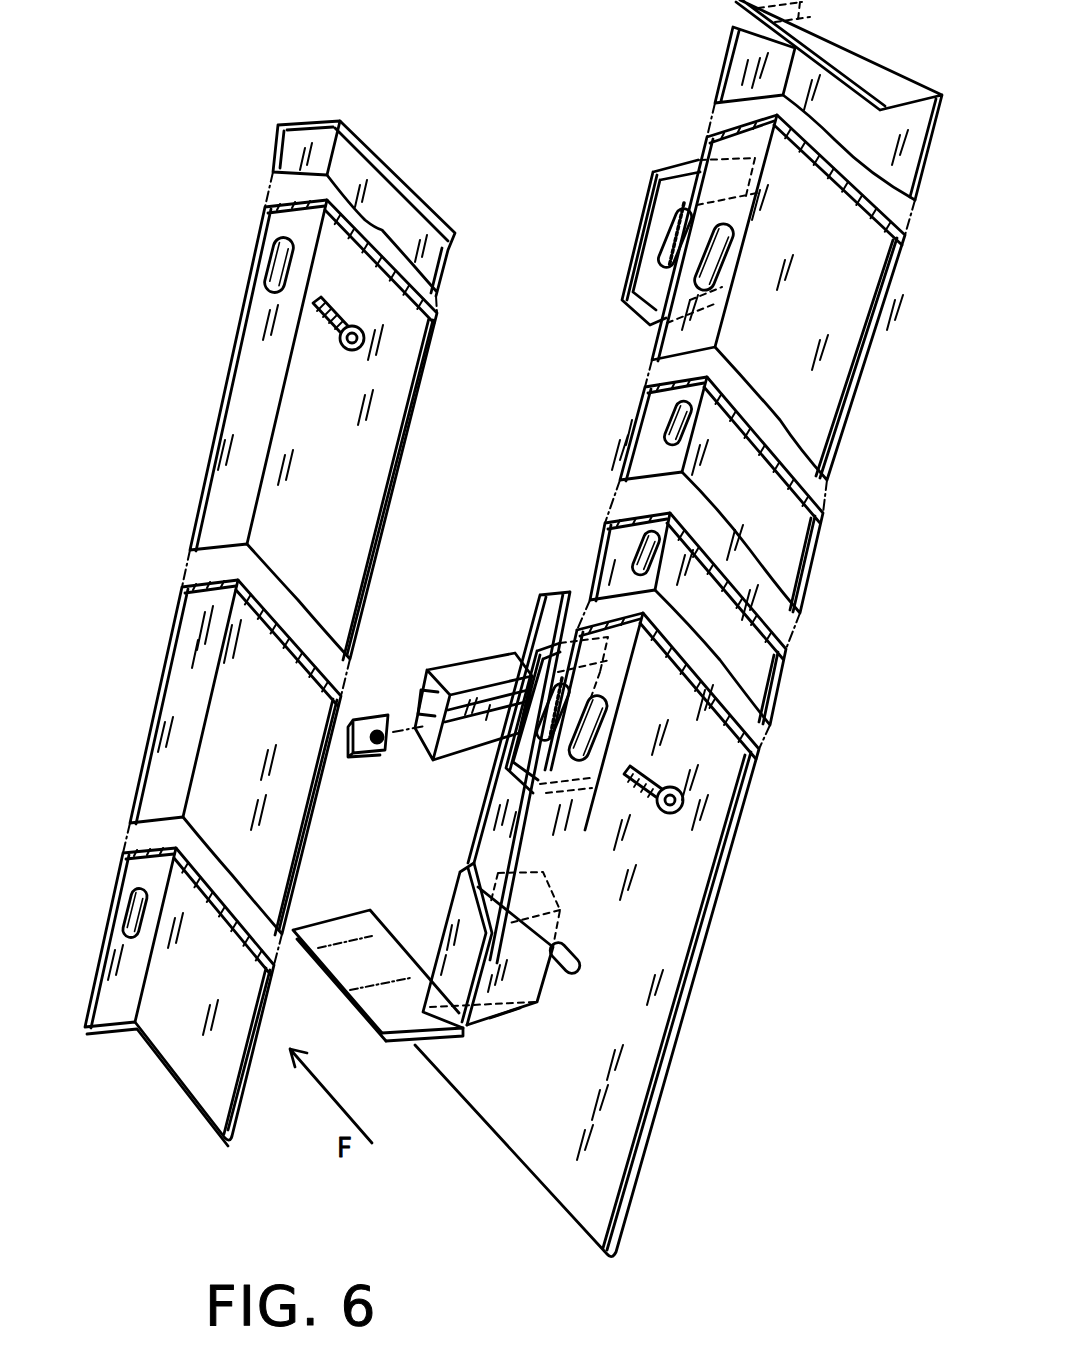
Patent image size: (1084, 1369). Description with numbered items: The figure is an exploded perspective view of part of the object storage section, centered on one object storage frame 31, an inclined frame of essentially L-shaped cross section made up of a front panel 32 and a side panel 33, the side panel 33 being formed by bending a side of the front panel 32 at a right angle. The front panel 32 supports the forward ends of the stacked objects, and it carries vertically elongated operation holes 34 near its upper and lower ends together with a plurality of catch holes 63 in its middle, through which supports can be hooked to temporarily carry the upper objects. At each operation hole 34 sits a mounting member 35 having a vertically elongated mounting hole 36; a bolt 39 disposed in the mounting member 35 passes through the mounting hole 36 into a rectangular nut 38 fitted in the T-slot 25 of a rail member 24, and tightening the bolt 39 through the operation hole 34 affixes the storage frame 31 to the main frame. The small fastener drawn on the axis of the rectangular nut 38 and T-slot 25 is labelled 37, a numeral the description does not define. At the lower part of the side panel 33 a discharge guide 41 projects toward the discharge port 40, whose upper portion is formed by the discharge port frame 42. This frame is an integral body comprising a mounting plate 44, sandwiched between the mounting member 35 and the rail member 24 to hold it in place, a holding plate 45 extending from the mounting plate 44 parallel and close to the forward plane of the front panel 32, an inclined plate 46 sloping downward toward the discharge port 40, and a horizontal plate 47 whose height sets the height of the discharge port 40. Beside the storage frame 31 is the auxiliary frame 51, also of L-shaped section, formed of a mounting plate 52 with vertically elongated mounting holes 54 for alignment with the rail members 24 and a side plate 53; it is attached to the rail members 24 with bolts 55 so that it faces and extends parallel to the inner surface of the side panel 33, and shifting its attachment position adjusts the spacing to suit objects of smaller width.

The rail member 24 is at (468, 668).
The T-slot 25 is at (448, 680).
The object storage frame 31 is at (727, 905).
The front panel 32 is at (622, 628).
The side panel 33 is at (738, 763).
The operation hole 34 is at (722, 253).
The mounting member 35 is at (648, 203).
The mounting hole 36 is at (670, 240).
The screw 37 is at (380, 742).
The rectangular nut 38 is at (358, 753).
The bolt 39 is at (654, 812).
The discharge port 40 is at (446, 854).
The discharge guide 41 is at (447, 937).
The discharge port frame 42 is at (508, 1024).
The mounting plate 44 is at (480, 827).
The holding plate 45 is at (525, 983).
The inclined plate 46 is at (447, 1033).
The horizontal plate 47 is at (356, 1002).
The auxiliary frame 51 is at (414, 480).
The mounting plate 52 is at (237, 400).
The side plate 53 is at (397, 415).
The mounting hole 54 is at (268, 258).
The bolt 55 is at (343, 354).
The catch hole 63 is at (670, 428).